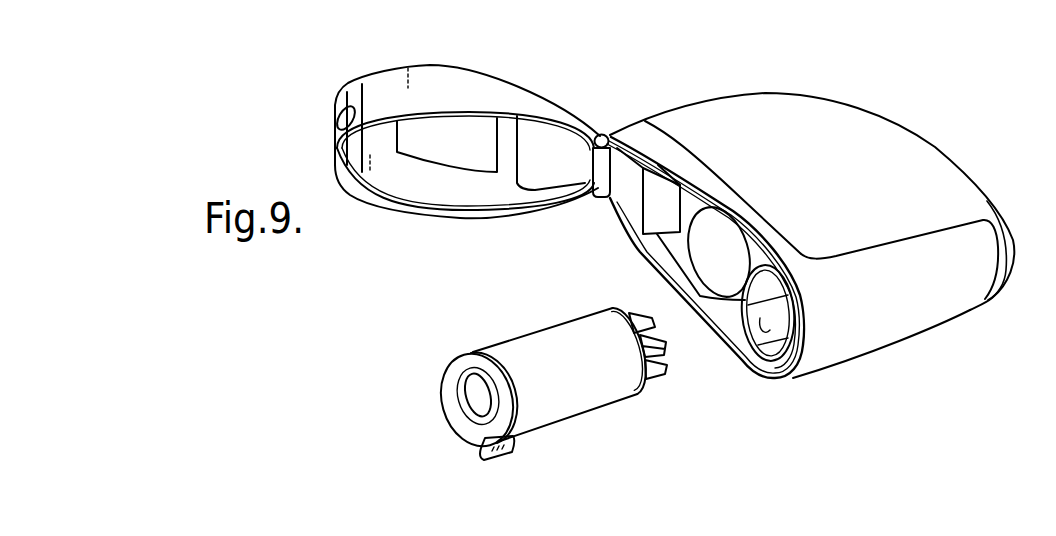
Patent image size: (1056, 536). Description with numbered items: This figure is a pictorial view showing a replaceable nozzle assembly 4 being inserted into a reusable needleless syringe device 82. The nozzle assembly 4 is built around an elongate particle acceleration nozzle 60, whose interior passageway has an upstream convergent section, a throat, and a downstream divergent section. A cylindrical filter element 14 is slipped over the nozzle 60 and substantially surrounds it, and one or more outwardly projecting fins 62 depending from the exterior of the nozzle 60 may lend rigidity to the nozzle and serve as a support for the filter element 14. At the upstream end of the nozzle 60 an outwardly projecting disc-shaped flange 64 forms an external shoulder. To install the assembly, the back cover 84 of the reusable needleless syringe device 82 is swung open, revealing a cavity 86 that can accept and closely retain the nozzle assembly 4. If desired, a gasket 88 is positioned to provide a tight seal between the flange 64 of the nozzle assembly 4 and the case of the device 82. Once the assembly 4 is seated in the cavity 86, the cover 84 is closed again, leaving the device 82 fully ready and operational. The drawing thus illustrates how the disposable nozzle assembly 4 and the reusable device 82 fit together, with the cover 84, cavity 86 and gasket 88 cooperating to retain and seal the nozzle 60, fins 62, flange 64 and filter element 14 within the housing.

The replaceable nozzle assembly 4 is at (507, 322).
The cylindrical filter element 14 is at (593, 388).
The particle acceleration nozzle 60 is at (667, 340).
The outwardly projecting fins 62 is at (634, 313).
The disc-shaped flange 64 is at (453, 377).
The reusable needleless syringe device 82 is at (923, 151).
The back cover 84 is at (484, 92).
The cavity 86 is at (767, 372).
The gasket 88 is at (790, 375).